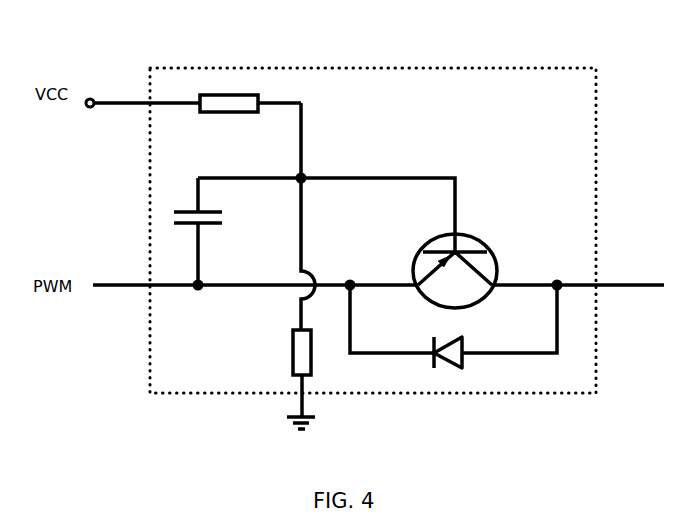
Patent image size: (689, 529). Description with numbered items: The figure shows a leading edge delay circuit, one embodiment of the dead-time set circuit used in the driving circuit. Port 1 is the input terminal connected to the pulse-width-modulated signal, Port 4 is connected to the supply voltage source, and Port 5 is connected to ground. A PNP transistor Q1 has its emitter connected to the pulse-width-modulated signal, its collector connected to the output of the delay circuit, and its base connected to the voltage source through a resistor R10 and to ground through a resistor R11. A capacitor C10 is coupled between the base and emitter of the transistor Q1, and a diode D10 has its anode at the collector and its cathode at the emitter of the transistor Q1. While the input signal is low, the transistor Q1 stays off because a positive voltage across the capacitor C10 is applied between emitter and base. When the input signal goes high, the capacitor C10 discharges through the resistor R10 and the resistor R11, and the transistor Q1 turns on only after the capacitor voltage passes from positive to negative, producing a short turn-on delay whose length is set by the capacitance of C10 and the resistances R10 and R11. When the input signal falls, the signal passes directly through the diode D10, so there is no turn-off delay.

The resistor R10 is at (213, 117).
The resistor R11 is at (316, 336).
The capacitor C10 is at (230, 212).
The PNP transistor Q1 is at (488, 240).
The diode D10 is at (447, 371).
The voltage source terminal Port 4 is at (113, 110).
The input terminal Port 1 is at (117, 291).
The ground terminal Port 5 is at (295, 399).